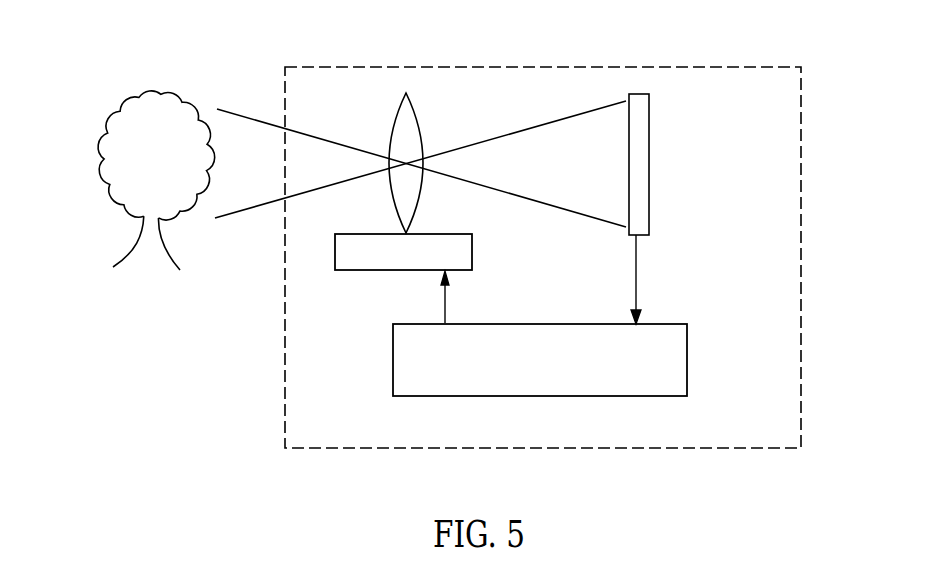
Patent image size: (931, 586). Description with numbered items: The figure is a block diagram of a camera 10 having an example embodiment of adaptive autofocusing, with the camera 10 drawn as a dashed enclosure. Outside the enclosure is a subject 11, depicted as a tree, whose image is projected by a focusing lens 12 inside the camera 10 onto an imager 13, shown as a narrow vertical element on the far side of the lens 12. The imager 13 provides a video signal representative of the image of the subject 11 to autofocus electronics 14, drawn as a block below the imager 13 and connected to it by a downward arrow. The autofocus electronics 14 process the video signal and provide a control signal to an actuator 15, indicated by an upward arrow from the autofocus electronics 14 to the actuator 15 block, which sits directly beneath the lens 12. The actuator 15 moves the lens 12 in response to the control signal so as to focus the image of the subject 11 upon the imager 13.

The camera 10 is at (802, 120).
The subject 11 is at (100, 139).
The focusing lens 12 is at (413, 113).
The imager 13 is at (649, 207).
The autofocus electronics 14 is at (687, 335).
The actuator 15 is at (472, 246).